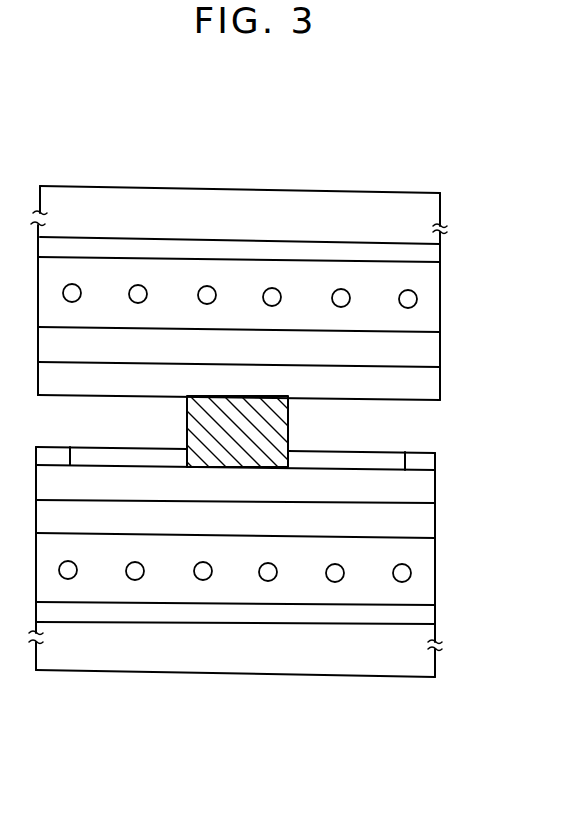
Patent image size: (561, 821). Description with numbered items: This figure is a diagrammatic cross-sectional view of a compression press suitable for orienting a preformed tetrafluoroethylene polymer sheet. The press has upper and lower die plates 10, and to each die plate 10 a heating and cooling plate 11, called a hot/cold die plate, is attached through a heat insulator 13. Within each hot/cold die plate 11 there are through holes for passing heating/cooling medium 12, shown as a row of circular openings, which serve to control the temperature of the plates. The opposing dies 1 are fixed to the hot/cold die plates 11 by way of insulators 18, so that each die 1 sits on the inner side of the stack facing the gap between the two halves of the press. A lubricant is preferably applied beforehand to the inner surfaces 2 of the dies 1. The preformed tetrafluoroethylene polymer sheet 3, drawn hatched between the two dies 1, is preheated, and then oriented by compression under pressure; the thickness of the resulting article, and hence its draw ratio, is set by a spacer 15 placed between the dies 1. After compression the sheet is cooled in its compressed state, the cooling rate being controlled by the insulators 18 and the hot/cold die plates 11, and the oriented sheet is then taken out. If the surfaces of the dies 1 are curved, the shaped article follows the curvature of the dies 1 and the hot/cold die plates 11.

The opposing dies 1 is at (430, 388).
The inner surfaces of the dies 2 is at (143, 465).
The preformed tetrafluoroethylene polymer sheet 3 is at (278, 435).
The die plates 10 is at (350, 198).
The heating and cooling plates 11 is at (432, 303).
The through holes for passing heating/cooling medium 12 is at (282, 297).
The heat insulators 13 is at (433, 257).
The spacer 15 is at (387, 452).
The insulators 18 is at (429, 357).